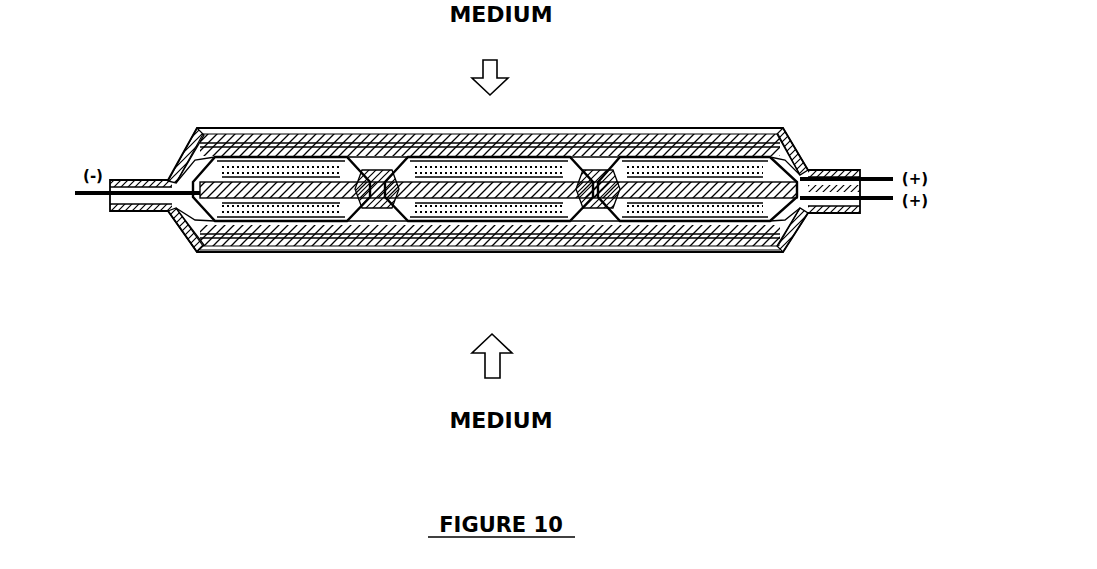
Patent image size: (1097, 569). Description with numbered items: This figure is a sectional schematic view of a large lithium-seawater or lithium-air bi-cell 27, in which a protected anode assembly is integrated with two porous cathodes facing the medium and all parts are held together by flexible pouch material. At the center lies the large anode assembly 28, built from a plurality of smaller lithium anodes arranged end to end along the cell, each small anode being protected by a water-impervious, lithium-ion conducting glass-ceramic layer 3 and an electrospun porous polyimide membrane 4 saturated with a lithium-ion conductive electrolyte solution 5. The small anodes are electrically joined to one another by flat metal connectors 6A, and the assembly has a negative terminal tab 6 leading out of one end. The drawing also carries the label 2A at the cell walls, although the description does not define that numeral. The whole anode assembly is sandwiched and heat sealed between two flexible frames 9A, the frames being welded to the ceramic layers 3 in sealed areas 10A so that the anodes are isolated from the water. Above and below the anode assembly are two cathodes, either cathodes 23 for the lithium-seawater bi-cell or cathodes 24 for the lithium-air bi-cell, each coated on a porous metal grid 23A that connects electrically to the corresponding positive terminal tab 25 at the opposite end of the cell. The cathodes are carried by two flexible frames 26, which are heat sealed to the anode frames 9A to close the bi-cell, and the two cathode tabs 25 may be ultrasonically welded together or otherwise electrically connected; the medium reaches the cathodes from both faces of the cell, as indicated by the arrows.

The cell casing 2A is at (297, 248).
The water-impervious, lithium-ion conducting solid state glass-ceramic layer 3 is at (298, 138).
The electrospun porous polyimide membrane 4 is at (472, 196).
The electrolyte solution 5 is at (258, 140).
The flat metal collector tab 6 is at (88, 200).
The flat metal connector 6A is at (606, 160).
The flexible top frame 9A is at (212, 137).
The heat sealed area 10A is at (658, 140).
The cathode for lithium-seawater cell 23 is at (485, 213).
The cathode for lithium-air cell 24 is at (520, 130).
The porous metal grid 23A is at (372, 148).
The cathode terminal tab 25 is at (892, 155).
The cathode flexible top frame 26 is at (170, 142).
The lithium-seawater or lithium-air bi-cell 27 is at (758, 423).
The large anode assembly 28 is at (370, 255).